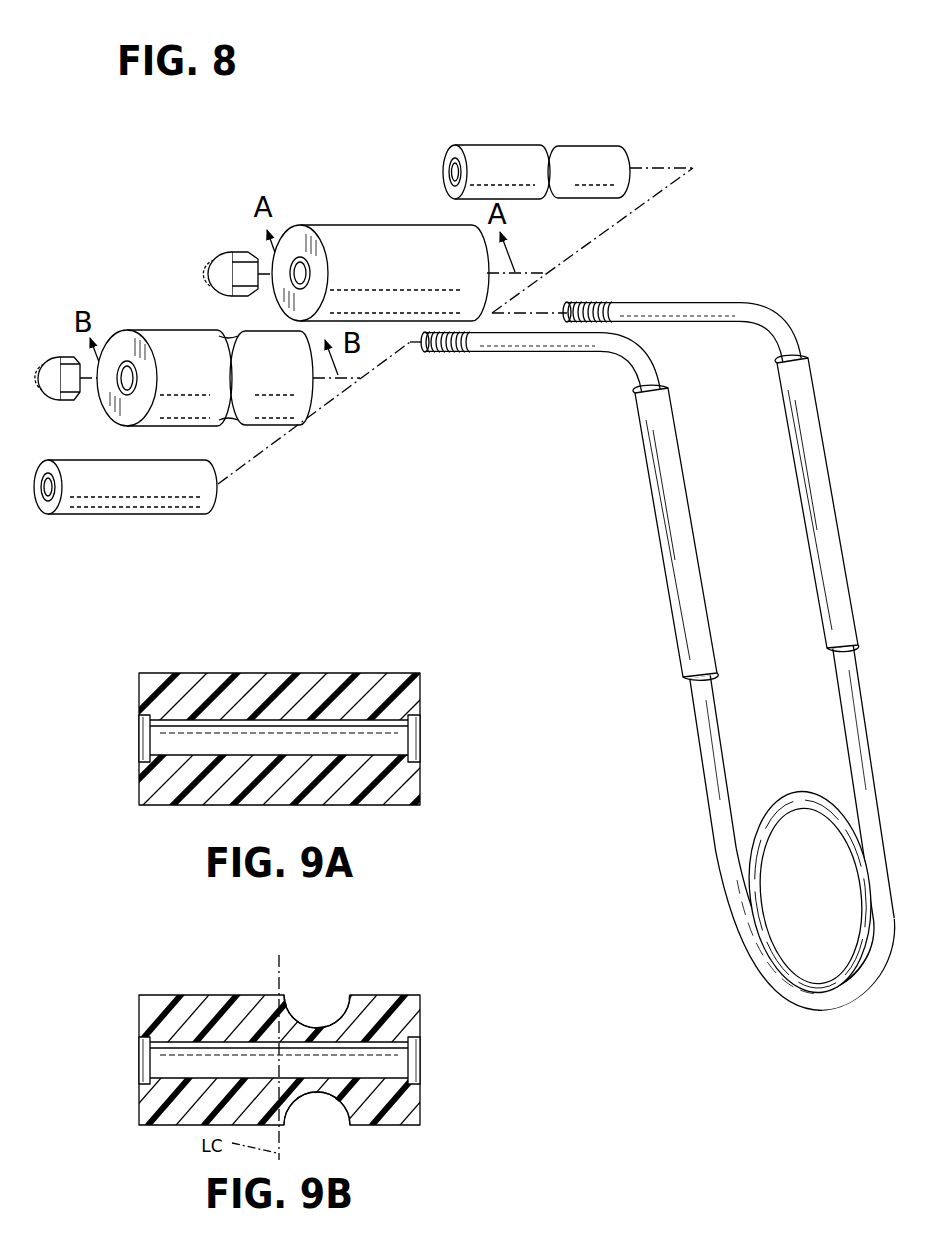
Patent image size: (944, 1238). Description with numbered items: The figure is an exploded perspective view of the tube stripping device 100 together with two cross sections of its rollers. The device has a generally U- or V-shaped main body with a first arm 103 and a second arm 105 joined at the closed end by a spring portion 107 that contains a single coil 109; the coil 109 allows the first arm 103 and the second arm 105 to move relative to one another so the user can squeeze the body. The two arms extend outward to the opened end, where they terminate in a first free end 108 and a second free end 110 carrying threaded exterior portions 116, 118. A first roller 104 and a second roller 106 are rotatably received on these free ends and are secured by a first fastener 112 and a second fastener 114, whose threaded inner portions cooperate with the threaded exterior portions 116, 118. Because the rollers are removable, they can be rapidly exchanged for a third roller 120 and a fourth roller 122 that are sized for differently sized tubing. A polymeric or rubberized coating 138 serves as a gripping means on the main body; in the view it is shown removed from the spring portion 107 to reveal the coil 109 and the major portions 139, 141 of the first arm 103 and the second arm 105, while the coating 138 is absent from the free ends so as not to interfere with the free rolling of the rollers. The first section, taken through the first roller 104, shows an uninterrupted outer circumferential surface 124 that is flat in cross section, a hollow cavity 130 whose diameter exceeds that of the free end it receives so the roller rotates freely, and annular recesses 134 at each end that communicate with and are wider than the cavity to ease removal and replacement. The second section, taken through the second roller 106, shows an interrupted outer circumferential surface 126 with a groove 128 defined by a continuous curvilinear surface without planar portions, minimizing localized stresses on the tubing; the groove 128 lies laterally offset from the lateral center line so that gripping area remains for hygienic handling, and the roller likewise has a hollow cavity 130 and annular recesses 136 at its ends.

In FIG. 8, the tube stripping device 100 is at (748, 112).
In FIG. 8, the first arm 103 is at (835, 497).
In FIG. 8, the first roller 104 is at (357, 226).
In FIG. 9A, the first roller 104 is at (378, 672).
In FIG. 8, the second arm 105 is at (662, 571).
In FIG. 8, the second roller 106 is at (142, 330).
In FIG. 8, the spring portion 107 is at (828, 1016).
In FIG. 8, the first free end 108 is at (693, 303).
In FIG. 8, the coil 109 is at (790, 803).
In FIG. 8, the second free end 110 is at (575, 352).
In FIG. 8, the first fastener 112 is at (214, 262).
In FIG. 8, the second fastener 114 is at (44, 363).
In FIG. 8, the threaded exterior portion 116 is at (592, 302).
In FIG. 8, the threaded exterior portion 118 is at (445, 356).
In FIG. 8, the third roller 120 is at (135, 515).
In FIG. 8, the fourth roller 122 is at (575, 143).
In FIG. 8, the uninterrupted outer circumferential surface 124 is at (405, 221).
In FIG. 9A, the uninterrupted outer circumferential surface 124 is at (279, 668).
In FIG. 8, the interrupted outer circumferential surface 126 is at (183, 327).
In FIG. 9B, the interrupted outer circumferential surface 126 is at (254, 990).
In FIG. 9B, the groove 128 is at (289, 1018).
In FIG. 9A, the hollow cavity 130 is at (203, 735).
In FIG. 9B, the hollow cavity 130 is at (180, 1055).
In FIG. 9A, the annular recess 134 is at (143, 740).
In FIG. 9B, the annular recess 136 is at (143, 1063).
In FIG. 8, the polymeric or rubberized coating 138 is at (682, 452).
In FIG. 8, the major portion of the first arm 139 is at (848, 758).
In FIG. 8, the major portion of the second arm 141 is at (703, 773).